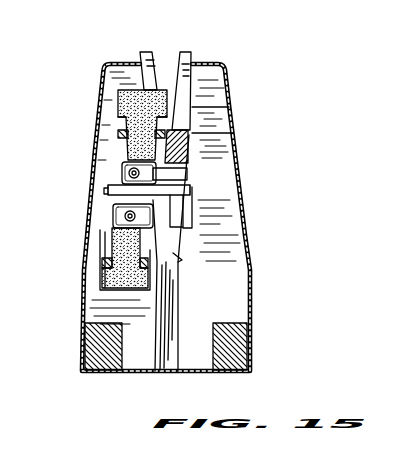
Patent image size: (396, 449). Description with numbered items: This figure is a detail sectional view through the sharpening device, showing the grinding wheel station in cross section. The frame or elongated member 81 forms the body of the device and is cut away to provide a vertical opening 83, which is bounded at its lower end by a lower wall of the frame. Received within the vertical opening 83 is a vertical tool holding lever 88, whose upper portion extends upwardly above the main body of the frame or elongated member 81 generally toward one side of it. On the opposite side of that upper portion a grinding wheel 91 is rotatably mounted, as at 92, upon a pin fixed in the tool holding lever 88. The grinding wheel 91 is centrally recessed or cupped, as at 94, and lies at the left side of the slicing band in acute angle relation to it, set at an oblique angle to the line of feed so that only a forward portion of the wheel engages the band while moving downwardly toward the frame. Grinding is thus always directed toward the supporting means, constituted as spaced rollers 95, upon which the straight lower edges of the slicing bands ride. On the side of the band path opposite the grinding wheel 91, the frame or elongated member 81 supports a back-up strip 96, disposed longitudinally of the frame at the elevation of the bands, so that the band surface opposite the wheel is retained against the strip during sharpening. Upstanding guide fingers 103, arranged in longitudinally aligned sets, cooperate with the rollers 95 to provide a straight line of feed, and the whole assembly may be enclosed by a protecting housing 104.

The frame or elongated member 81 is at (233, 349).
The vertical opening 83 is at (100, 349).
The tool holding lever 88 is at (174, 287).
The grinding wheel 91 is at (118, 100).
The rotatable mounting of grinding wheel 92 is at (122, 172).
The central recess or cup of grinding wheel 94 is at (120, 131).
The roller 95 is at (110, 194).
The back-up strip 96 is at (200, 155).
The guide fingers 103 is at (176, 63).
The protecting housing 104 is at (252, 276).